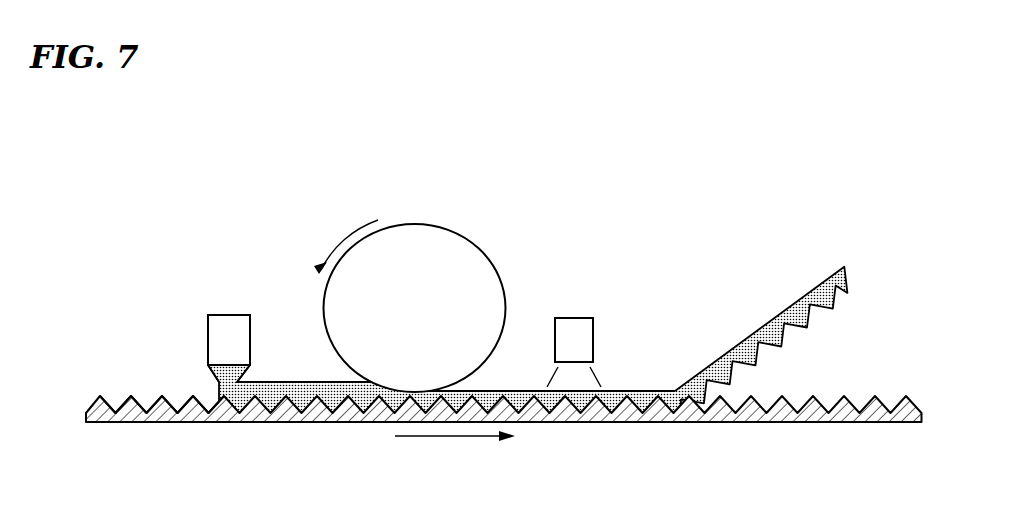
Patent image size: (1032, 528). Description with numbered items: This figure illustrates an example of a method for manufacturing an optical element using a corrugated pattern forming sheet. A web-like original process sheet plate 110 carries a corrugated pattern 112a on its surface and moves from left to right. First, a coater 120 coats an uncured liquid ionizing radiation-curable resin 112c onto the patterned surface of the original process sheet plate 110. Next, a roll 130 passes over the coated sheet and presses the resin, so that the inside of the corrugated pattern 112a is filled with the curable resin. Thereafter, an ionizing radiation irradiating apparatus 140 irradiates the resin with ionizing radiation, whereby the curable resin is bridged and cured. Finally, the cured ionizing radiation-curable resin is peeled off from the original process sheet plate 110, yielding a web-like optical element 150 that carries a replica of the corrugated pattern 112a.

The original process sheet plate 110 is at (94, 391).
The corrugated pattern 112a is at (178, 410).
The uncured liquid ionizing radiation-curable resin 112c is at (297, 382).
The coater 120 is at (231, 315).
The roll 130 is at (456, 229).
The ionizing radiation irradiating apparatus 140 is at (577, 318).
The web-like optical element 150 is at (788, 308).